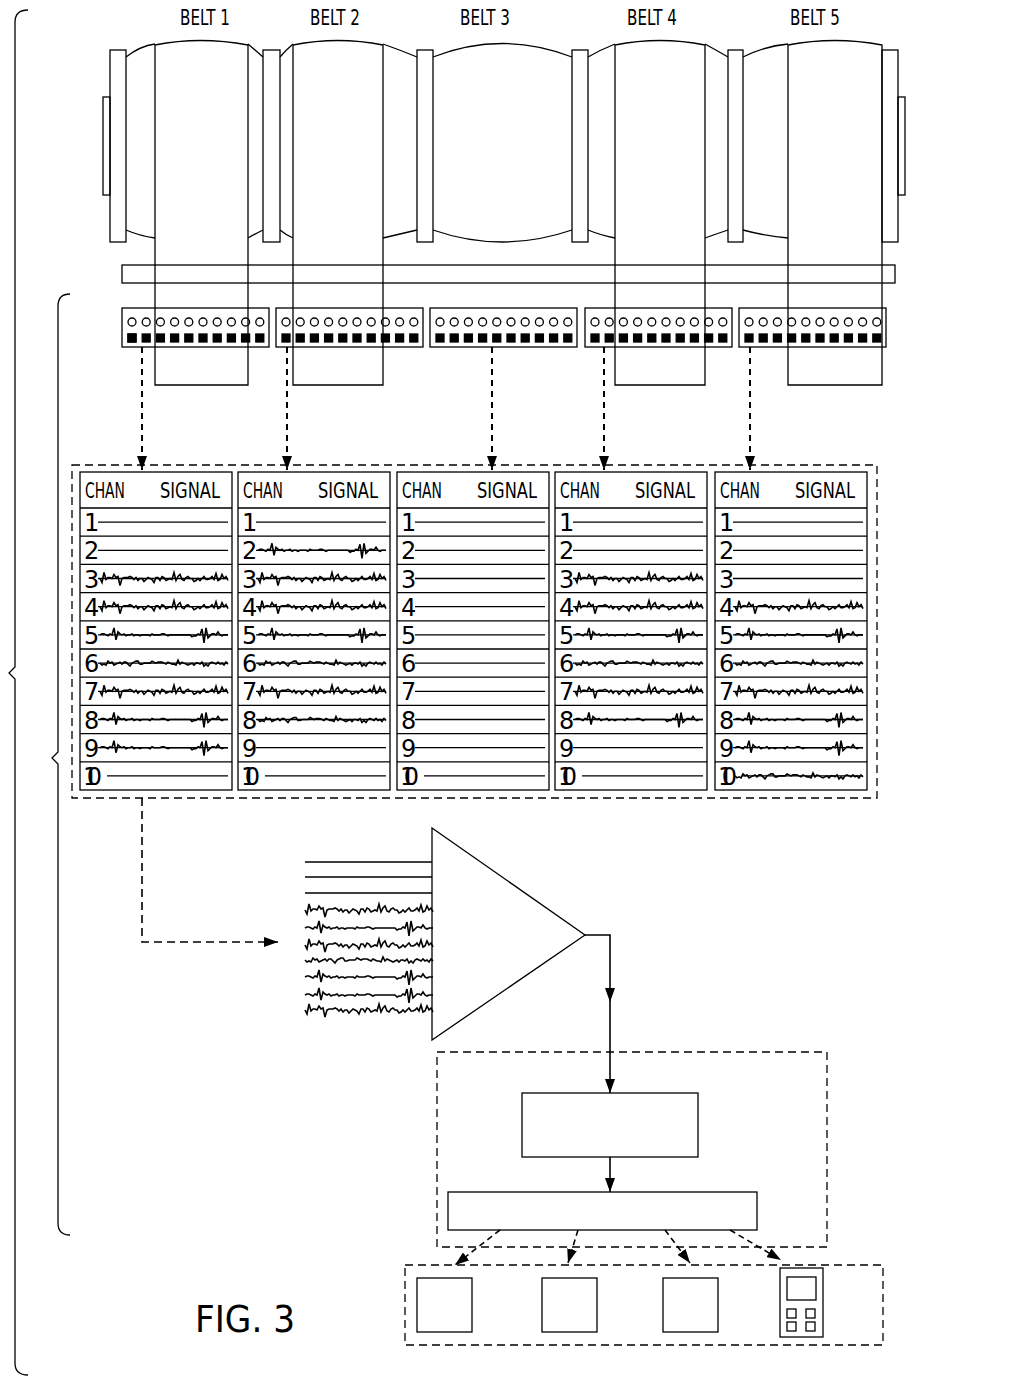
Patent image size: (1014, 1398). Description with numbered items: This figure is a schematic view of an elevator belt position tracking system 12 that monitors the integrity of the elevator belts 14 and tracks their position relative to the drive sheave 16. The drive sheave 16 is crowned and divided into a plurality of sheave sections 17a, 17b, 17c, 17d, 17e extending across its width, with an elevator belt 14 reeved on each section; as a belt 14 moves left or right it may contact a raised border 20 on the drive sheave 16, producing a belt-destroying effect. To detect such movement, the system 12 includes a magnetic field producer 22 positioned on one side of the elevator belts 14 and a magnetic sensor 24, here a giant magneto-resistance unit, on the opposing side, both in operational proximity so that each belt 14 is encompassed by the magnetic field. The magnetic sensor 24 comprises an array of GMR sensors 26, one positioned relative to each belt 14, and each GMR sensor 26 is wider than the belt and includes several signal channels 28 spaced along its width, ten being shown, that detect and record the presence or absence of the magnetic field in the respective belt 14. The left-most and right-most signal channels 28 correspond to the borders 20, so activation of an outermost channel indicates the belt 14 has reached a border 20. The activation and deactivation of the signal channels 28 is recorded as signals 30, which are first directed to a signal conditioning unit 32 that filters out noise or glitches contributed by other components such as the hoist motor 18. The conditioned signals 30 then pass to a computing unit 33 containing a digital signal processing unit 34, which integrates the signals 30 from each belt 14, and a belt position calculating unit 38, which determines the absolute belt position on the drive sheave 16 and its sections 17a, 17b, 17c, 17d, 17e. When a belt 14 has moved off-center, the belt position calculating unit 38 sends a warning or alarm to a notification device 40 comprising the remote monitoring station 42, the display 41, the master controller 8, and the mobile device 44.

The elevator belt position tracking system 12 is at (14, 692).
The elevator belt 14 is at (167, 55).
The drive sheave 16 is at (144, 68).
The sheave section 17a is at (143, 195).
The sheave section 17b is at (392, 60).
The sheave section 17c is at (535, 60).
The sheave section 17d is at (611, 60).
The sheave section 17e is at (768, 60).
The hoist motor 18 is at (108, 125).
The border 20 is at (118, 66).
The magnetic field producer 22 is at (122, 280).
The magnetic sensor 24 is at (47, 764).
The GMR sensor 26 is at (122, 325).
The signal channel 28 is at (133, 348).
The signal 30 is at (828, 465).
The signal conditioning unit 32 is at (512, 886).
The computing unit 33 is at (755, 1052).
The digital signal processing unit 34 is at (700, 1115).
The belt position calculating unit 38 is at (722, 1192).
The notification device 40 is at (850, 1260).
The display 41 is at (597, 1320).
The remote monitoring station 42 is at (472, 1320).
The master controller 8 is at (718, 1312).
The mobile device 44 is at (823, 1318).